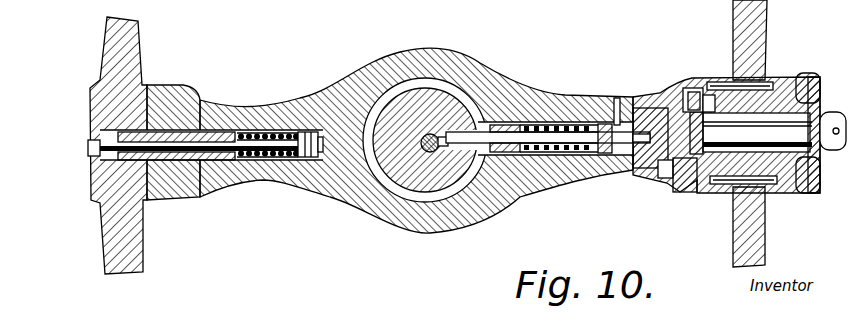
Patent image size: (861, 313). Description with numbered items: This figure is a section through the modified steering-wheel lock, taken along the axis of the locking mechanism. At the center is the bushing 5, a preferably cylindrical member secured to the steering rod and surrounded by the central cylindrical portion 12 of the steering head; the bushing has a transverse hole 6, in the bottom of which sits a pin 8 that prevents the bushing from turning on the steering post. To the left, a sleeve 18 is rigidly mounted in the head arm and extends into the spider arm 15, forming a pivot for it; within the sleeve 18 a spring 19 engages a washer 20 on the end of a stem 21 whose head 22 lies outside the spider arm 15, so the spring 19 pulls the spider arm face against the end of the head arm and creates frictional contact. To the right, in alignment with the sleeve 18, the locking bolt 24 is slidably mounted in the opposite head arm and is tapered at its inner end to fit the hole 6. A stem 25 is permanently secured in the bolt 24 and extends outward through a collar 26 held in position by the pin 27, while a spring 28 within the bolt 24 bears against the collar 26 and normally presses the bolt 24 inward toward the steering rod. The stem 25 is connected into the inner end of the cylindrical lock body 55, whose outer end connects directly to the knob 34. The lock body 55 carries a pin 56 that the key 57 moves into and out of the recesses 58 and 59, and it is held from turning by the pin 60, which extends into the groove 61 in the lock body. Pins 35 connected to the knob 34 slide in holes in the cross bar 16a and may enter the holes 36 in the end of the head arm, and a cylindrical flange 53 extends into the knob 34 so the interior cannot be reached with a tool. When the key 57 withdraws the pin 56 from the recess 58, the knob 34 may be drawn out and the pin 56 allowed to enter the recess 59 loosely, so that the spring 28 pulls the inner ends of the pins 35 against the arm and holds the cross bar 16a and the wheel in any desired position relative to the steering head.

The bushing 5 is at (450, 107).
The transverse hole 6 is at (463, 150).
The pin 8 is at (463, 90).
The central cylindrical portion 12 is at (420, 60).
The spider arm 15 is at (143, 28).
The cross bar 16a is at (733, 8).
The sleeve 18 is at (198, 125).
The spring 19 is at (245, 160).
The washer 20 is at (296, 130).
The stem 21 is at (202, 182).
The head 22 is at (90, 152).
The locking bolt 24 is at (535, 190).
The stem 25 is at (598, 155).
The collar 26 is at (623, 175).
The pin 27 is at (617, 98).
The spring 28 is at (562, 173).
The knob 34 is at (812, 74).
The pins 35 is at (776, 80).
The holes 36 is at (706, 82).
The cylindrical flange 53 is at (762, 118).
The lock body 55 is at (756, 132).
The pin 56 is at (692, 117).
The key 57 is at (828, 116).
The recess 58 is at (684, 92).
The recess 59 is at (704, 96).
The pin 60 is at (678, 192).
The groove 61 is at (665, 178).